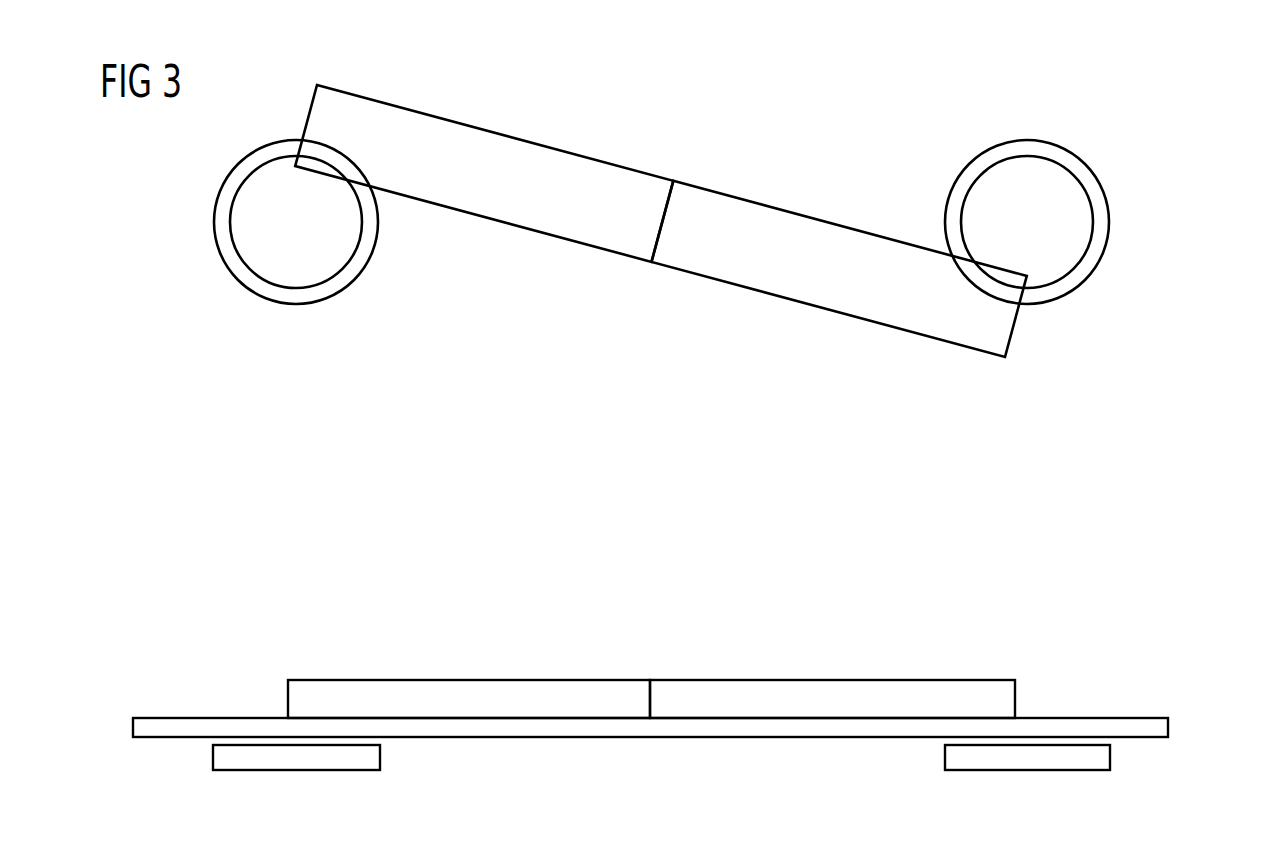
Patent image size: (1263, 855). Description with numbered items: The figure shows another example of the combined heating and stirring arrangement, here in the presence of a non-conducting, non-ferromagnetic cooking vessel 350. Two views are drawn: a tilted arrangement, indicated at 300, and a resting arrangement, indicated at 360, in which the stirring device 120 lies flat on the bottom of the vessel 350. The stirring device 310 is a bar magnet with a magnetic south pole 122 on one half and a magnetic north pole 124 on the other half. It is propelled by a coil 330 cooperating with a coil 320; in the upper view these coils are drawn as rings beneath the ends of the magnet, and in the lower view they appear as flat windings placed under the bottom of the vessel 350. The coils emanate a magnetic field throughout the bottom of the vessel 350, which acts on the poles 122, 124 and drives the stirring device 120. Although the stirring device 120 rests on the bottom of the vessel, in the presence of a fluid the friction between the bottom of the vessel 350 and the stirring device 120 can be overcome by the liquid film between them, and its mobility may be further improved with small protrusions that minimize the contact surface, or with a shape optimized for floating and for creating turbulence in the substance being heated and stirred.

The stirring device 120 is at (657, 401).
The magnetic south pole 122 is at (513, 225).
The magnetic north pole 124 is at (812, 306).
The sensor arrangement in tilted state 300 is at (1041, 348).
The stirring device 310 is at (742, 133).
The coil 320 is at (247, 288).
The coil 330 is at (1086, 163).
The non-conducting/non-ferromagnetic vessel 350 is at (1060, 728).
The sensor arrangement in rest state 360 is at (1126, 672).